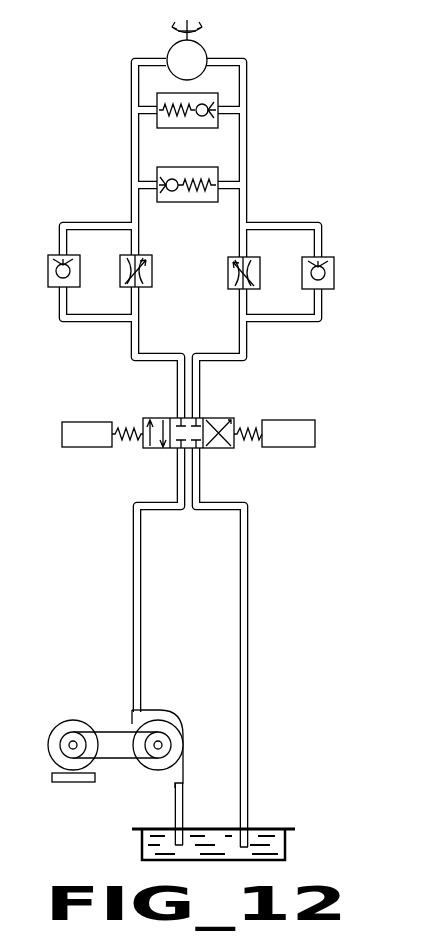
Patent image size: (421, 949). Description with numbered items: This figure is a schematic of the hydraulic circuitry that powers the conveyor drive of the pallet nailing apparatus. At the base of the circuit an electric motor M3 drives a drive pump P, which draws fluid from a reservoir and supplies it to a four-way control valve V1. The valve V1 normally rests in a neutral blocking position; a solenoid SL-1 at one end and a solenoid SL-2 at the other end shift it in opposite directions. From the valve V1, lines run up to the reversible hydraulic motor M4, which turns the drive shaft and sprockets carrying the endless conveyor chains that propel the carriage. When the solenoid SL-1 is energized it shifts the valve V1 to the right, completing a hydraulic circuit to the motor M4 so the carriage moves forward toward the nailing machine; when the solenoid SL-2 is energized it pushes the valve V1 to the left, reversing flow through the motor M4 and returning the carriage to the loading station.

The reversible hydraulic motor M4 is at (204, 56).
The electric motor M3 is at (70, 718).
The drive pump P is at (170, 722).
The four-way control valve V1 is at (216, 418).
The solenoid SL-1 is at (88, 426).
The solenoid SL-2 is at (301, 414).